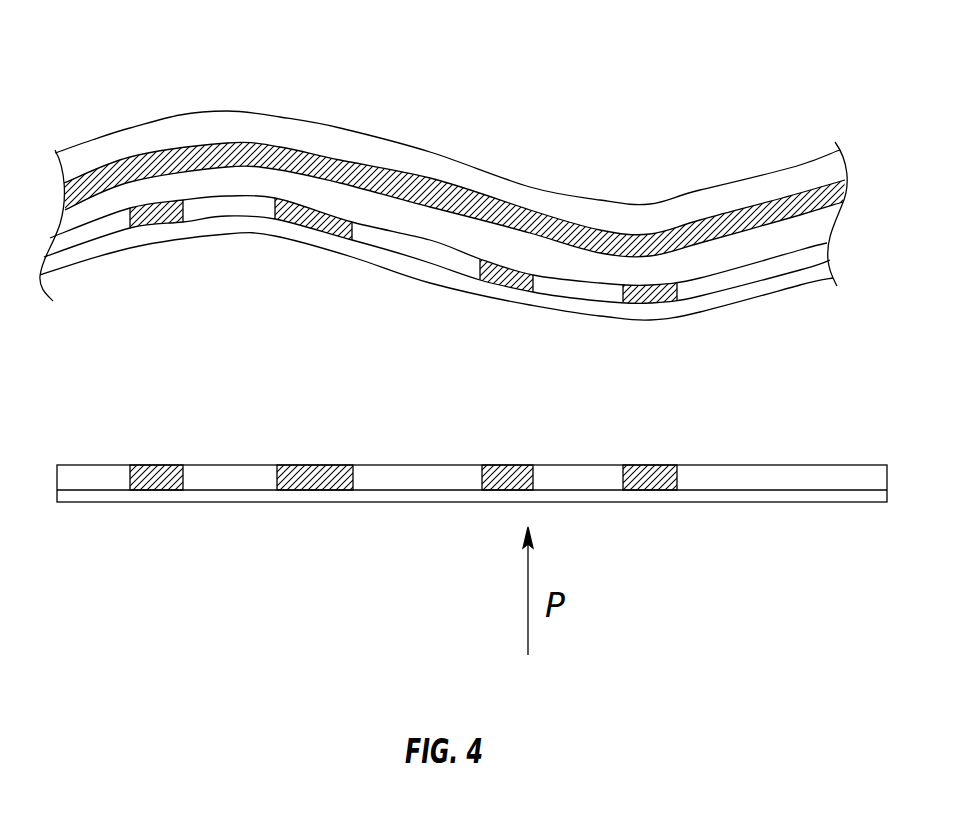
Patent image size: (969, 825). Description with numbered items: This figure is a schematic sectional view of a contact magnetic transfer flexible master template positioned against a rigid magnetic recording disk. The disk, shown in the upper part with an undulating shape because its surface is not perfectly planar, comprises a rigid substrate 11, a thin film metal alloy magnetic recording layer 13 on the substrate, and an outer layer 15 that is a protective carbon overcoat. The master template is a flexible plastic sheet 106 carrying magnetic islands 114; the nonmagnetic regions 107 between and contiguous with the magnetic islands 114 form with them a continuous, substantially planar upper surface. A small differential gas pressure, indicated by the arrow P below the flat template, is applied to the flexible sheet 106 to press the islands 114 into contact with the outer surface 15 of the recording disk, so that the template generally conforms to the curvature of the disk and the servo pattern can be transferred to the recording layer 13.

The rigid substrate 11 is at (783, 168).
The magnetic recording layer 13 is at (295, 158).
The outer layer 15 is at (195, 173).
The flexible plastic sheet 106 is at (803, 275).
The nonmagnetic regions 107 is at (222, 205).
The magnetic islands 114 is at (155, 222).